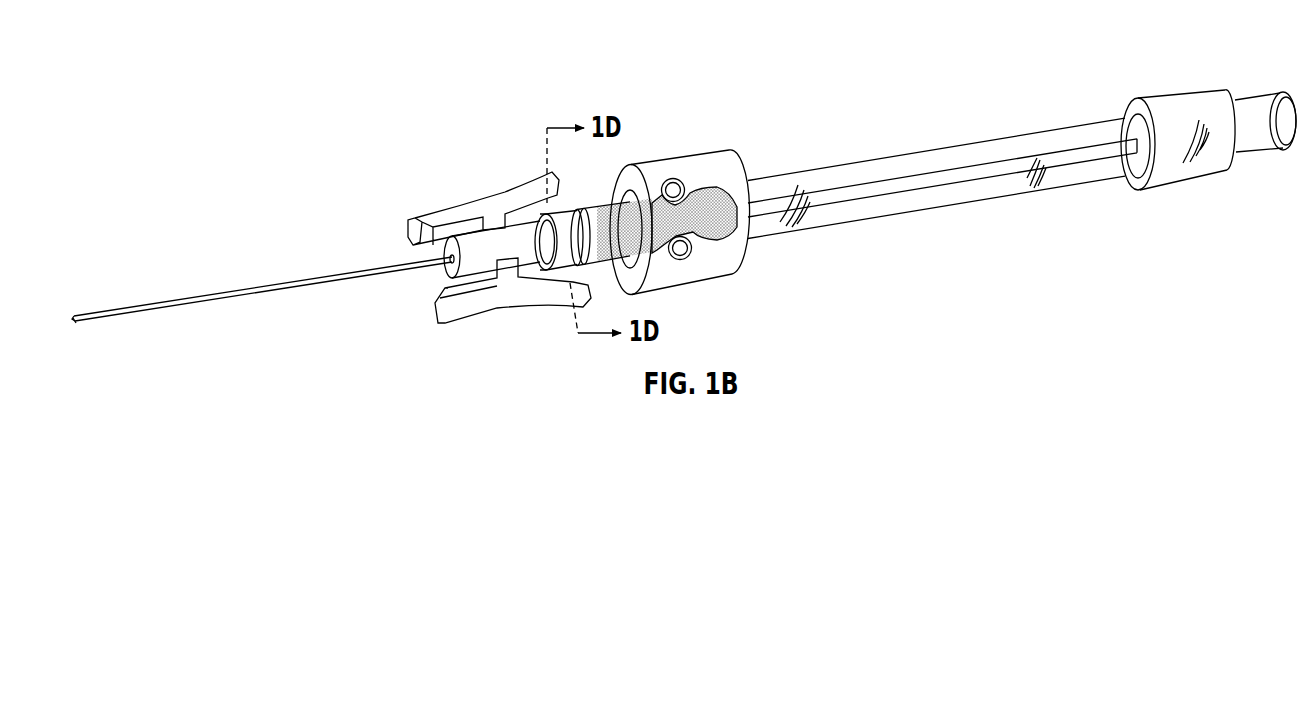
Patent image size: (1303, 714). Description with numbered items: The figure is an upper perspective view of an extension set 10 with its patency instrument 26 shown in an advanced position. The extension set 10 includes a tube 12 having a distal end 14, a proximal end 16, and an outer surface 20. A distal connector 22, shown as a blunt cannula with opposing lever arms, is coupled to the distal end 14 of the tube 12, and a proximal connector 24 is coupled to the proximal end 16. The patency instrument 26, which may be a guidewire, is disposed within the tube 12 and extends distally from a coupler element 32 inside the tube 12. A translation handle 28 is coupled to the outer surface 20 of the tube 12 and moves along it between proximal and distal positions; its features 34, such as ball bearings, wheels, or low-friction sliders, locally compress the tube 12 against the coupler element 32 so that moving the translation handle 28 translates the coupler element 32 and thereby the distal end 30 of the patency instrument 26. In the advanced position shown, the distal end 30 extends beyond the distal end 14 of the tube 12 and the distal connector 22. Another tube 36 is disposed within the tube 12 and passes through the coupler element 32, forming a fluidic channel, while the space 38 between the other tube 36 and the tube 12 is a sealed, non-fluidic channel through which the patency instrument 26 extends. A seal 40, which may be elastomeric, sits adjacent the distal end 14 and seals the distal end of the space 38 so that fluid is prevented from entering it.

The extension set 10 is at (1043, 42).
The tube 12 is at (970, 143).
The distal end 14 is at (546, 212).
The proximal end 16 is at (1132, 100).
The outer surface 20 is at (940, 208).
The distal connector 22 is at (470, 204).
The proximal connector 24 is at (1235, 106).
The patency instrument 26 is at (180, 299).
The translation handle 28 is at (705, 155).
The distal end 30 is at (74, 321).
The coupler element 32 is at (722, 210).
The features 34 is at (674, 181).
The other tube 36 is at (860, 188).
The space 38 is at (1037, 140).
The seal 40 is at (580, 208).